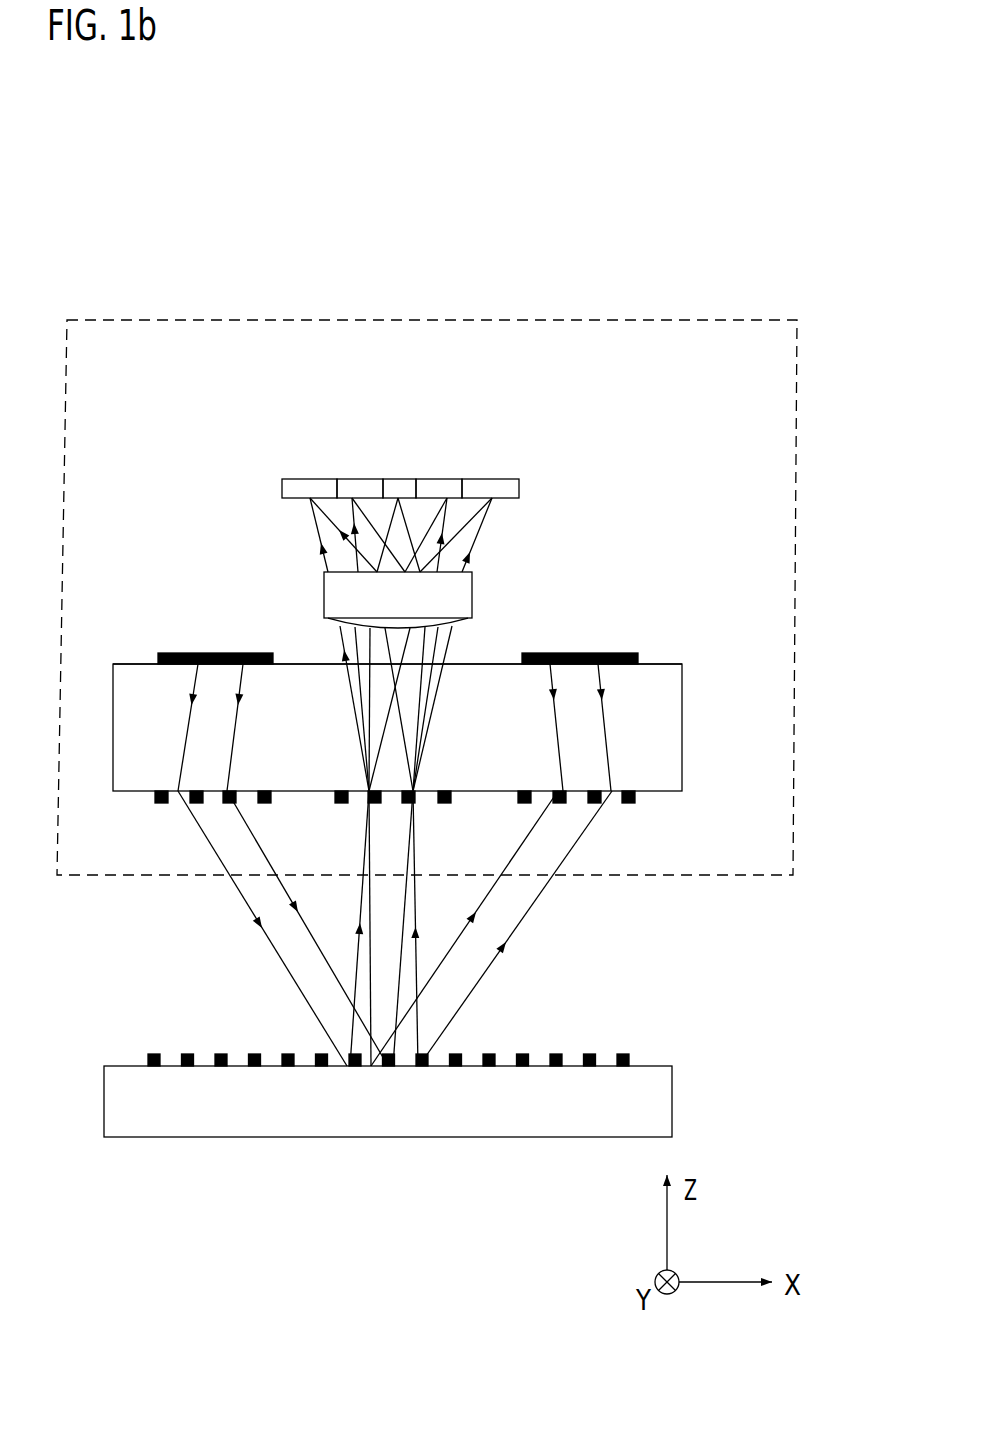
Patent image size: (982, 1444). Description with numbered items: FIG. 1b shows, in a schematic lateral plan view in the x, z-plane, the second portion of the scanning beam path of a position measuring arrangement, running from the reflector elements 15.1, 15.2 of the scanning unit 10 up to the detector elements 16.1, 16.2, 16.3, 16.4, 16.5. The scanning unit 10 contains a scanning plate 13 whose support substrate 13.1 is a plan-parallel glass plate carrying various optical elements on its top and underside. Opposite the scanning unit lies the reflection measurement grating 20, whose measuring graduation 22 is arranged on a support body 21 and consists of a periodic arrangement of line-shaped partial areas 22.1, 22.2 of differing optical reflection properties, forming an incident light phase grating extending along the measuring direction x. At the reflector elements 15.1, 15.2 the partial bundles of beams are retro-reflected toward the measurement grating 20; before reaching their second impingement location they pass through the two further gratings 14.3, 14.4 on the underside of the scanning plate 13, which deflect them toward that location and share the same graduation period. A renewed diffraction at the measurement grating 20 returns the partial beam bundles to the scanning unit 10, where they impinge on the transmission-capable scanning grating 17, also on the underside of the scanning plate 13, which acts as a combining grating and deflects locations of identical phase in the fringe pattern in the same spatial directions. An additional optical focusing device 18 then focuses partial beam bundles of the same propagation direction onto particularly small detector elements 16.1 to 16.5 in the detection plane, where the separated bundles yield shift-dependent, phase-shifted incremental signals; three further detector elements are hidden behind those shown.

The scanning unit 10 is at (805, 468).
The scanning plate 13 is at (481, 724).
The support substrate 13.1 is at (662, 677).
The grating 14.3 is at (207, 818).
The grating 14.4 is at (607, 812).
The reflector element 15.1 is at (223, 653).
The reflector element 15.2 is at (605, 653).
The detector element 16.1 is at (298, 487).
The detector element 16.2 is at (358, 487).
The detector element 16.3 is at (401, 487).
The detector element 16.4 is at (440, 487).
The detector element 16.5 is at (487, 487).
The scanning grating 17 is at (438, 812).
The optical focusing device 18 is at (452, 592).
The measurement grating 20 is at (449, 1105).
The support body 21 is at (565, 1106).
The measuring graduation 22 is at (414, 1021).
The partial area 22.1 is at (152, 1054).
The partial area 22.2 is at (172, 1060).